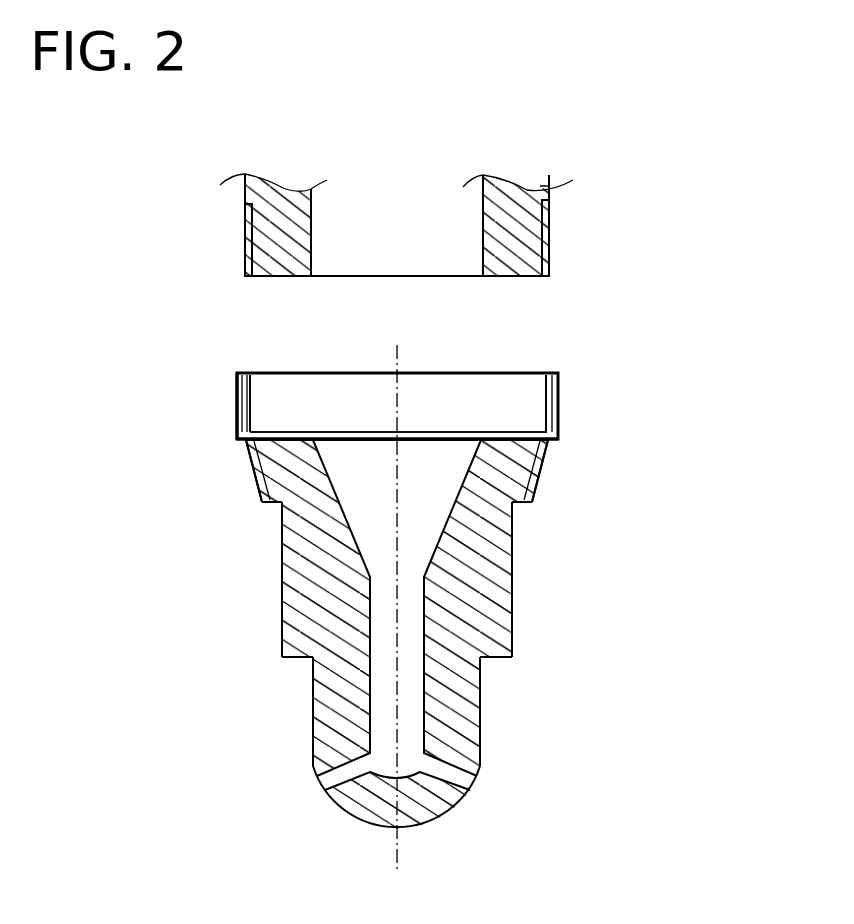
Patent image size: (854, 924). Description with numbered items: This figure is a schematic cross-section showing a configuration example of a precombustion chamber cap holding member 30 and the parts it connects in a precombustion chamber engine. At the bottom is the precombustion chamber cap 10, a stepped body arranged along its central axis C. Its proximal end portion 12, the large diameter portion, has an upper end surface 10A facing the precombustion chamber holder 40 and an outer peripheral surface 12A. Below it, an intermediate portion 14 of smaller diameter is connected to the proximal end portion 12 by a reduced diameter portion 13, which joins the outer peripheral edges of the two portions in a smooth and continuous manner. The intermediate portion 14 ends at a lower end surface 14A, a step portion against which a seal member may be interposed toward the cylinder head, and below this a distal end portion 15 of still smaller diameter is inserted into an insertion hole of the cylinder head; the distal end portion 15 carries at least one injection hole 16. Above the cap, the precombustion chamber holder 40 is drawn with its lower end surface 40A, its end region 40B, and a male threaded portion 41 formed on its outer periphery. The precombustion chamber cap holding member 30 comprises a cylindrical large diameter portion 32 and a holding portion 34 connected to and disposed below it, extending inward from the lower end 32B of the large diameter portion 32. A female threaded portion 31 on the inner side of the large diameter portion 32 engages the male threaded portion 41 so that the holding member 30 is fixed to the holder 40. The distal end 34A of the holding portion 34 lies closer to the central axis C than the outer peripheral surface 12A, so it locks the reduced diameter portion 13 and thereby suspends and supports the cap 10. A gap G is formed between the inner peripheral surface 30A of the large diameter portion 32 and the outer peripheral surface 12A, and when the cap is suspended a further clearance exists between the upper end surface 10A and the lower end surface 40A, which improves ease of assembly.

The precombustion chamber cap 10 is at (339, 618).
The upper end surface 10A is at (483, 432).
The proximal end portion 12 is at (252, 456).
The outer peripheral surface 12A is at (252, 448).
The reduced diameter portion 13 is at (252, 494).
The intermediate portion 14 is at (282, 564).
The lower end surface 14A is at (305, 657).
The distal end portion 15 is at (313, 703).
The injection hole 16 is at (321, 786).
The precombustion chamber cap holding member 30 is at (471, 430).
The inner peripheral surface 30A is at (254, 395).
The female threaded portion 31 is at (252, 383).
The large diameter portion 32 is at (560, 402).
The lower end 32B is at (560, 440).
The holding portion 34 is at (548, 470).
The distal end 34A is at (582, 490).
The precombustion chamber holder 40 is at (245, 194).
The lower end surface 40A is at (503, 278).
The upper end of housing wall 40B is at (555, 200).
The male threaded portion 41 is at (247, 245).
The gap G is at (256, 436).
The central axis C is at (396, 621).